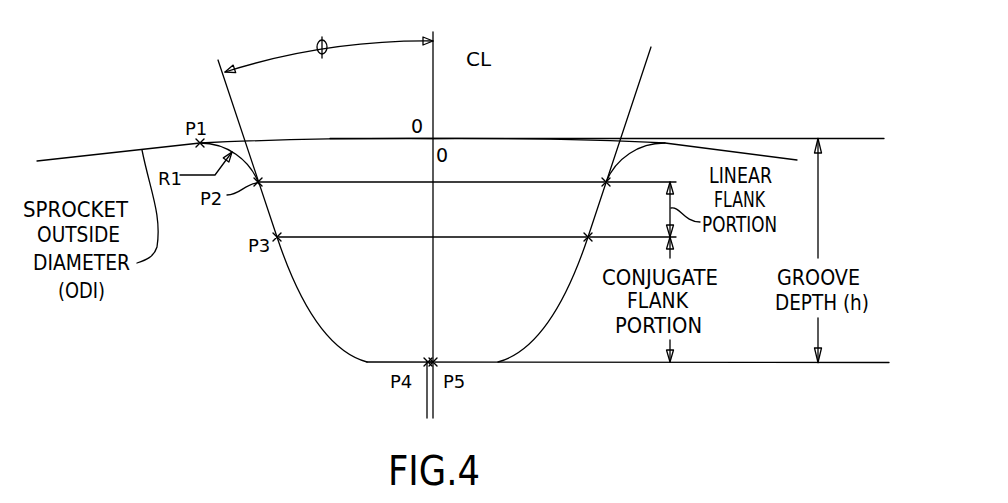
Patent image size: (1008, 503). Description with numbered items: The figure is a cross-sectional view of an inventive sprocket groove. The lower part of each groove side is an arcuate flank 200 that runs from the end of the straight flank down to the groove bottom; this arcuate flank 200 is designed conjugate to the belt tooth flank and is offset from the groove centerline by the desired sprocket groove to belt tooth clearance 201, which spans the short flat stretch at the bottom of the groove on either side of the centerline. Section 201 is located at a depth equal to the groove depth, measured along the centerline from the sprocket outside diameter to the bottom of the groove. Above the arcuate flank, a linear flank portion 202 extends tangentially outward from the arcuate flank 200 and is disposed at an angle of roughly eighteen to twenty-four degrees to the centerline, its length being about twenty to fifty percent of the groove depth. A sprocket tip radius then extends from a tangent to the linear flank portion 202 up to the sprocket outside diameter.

The sprocket groove flank 200 is at (314, 312).
The sprocket groove to belt tooth clearance 201 is at (488, 410).
The linear portion of the sprocket groove flank 202 is at (262, 210).